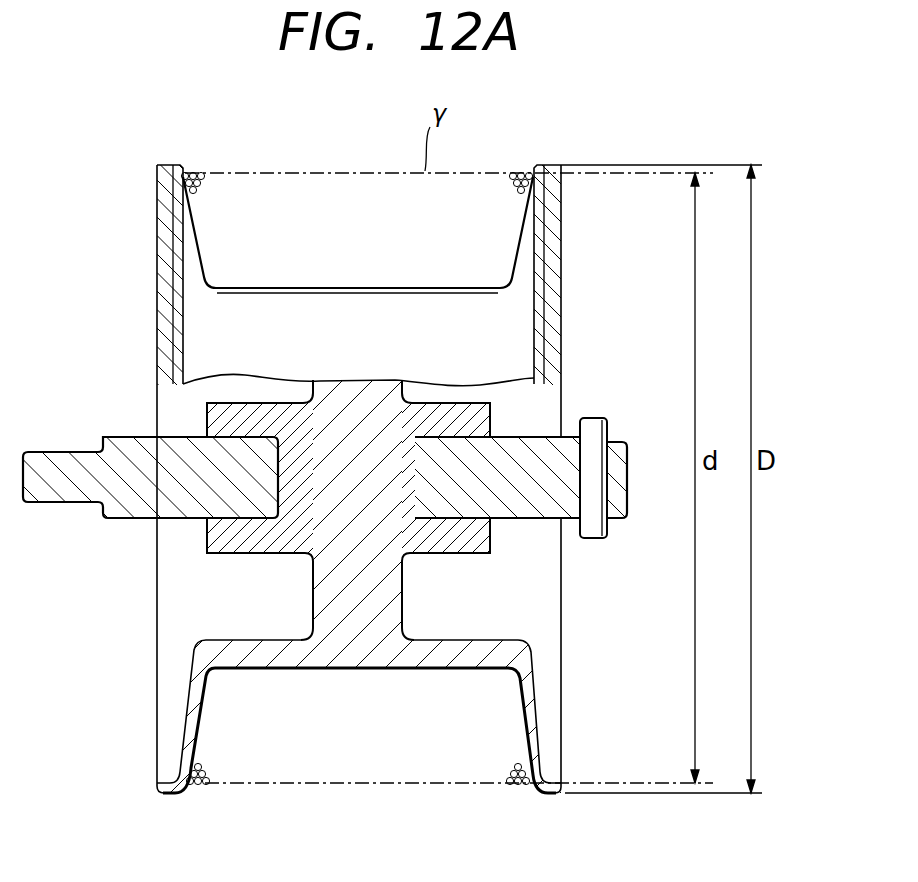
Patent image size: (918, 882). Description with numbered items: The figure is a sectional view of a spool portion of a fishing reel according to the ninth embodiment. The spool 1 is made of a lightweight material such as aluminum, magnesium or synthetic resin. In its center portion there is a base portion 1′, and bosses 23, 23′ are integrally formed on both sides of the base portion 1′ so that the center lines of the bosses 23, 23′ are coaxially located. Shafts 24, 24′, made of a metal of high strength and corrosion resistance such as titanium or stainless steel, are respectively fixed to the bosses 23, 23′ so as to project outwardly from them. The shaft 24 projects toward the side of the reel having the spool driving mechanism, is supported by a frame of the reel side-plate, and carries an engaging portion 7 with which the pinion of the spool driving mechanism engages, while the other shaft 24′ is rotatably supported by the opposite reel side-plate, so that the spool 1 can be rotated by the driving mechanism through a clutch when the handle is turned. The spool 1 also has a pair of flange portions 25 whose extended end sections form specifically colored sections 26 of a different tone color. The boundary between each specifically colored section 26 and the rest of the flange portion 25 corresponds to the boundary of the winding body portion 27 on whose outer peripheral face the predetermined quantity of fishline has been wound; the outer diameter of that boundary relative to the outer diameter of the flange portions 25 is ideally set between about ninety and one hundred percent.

The spool 1 is at (195, 730).
The base portion 1′ is at (402, 607).
The engaging portion 7 is at (597, 436).
The boss 23 is at (483, 410).
The boss 23′ is at (209, 413).
The shaft 24 is at (533, 519).
The shaft 24′ is at (137, 518).
The flange portion 25 is at (198, 326).
The specifically colored section 26 is at (157, 250).
The winding body portion 27 is at (413, 297).